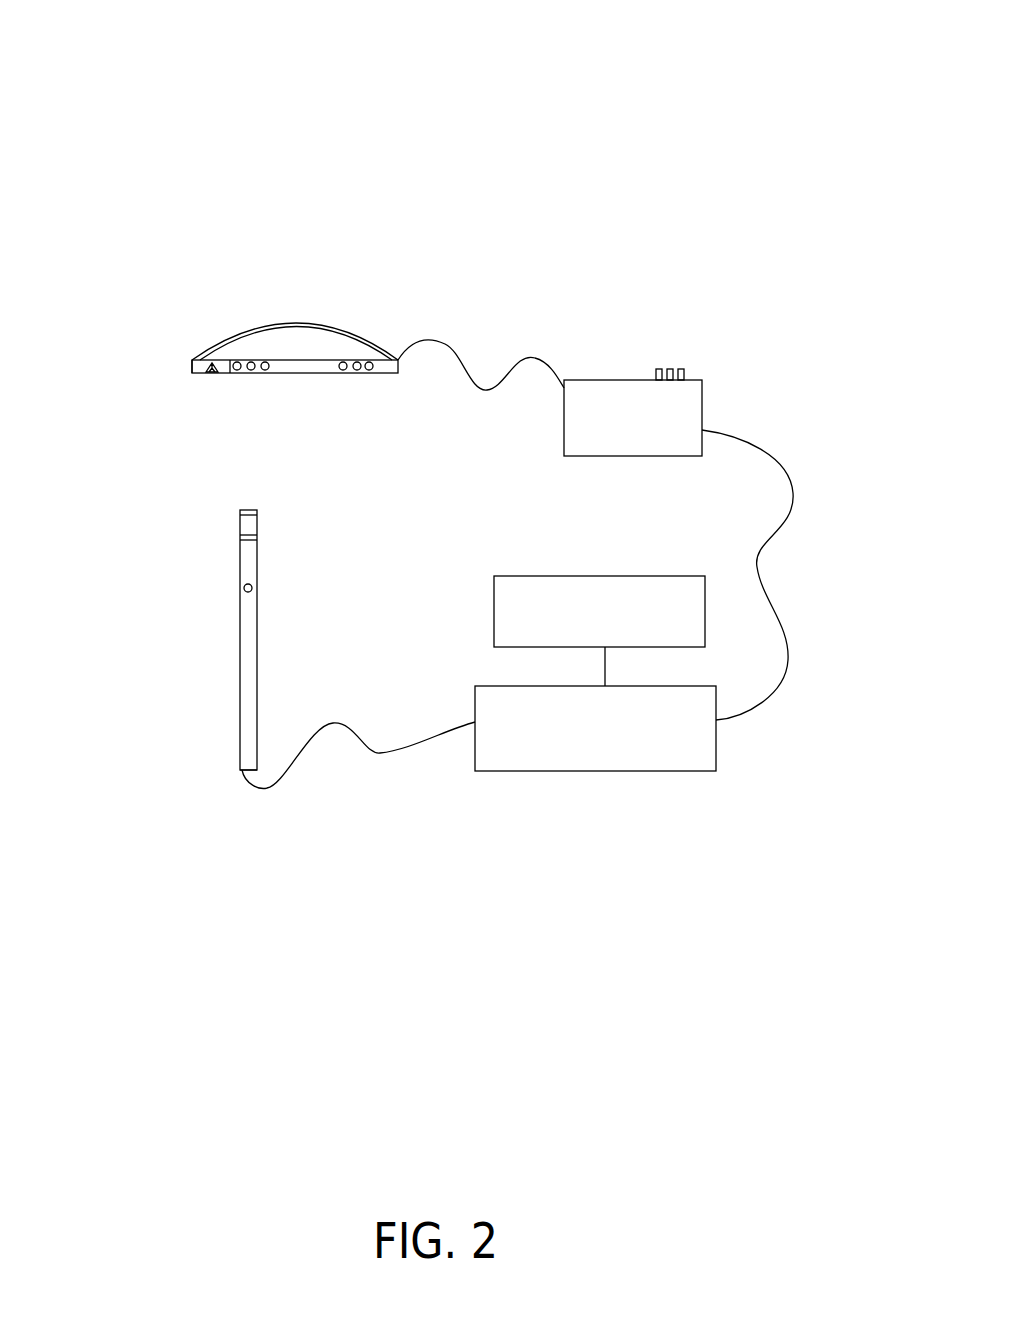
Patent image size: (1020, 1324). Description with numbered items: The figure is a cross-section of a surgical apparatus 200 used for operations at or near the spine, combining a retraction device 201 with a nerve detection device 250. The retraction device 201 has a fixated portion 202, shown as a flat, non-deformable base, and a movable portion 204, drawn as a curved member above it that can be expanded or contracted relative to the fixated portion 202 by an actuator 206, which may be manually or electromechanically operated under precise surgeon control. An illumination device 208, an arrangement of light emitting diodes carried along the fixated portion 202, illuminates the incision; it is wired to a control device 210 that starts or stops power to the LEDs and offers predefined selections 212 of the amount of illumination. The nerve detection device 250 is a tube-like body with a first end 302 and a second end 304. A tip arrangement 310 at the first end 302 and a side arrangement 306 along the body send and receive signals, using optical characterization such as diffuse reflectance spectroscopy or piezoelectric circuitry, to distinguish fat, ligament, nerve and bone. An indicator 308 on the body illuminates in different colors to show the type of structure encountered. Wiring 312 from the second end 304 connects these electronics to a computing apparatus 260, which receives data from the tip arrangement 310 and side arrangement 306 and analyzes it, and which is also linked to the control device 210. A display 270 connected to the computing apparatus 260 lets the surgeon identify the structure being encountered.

The surgical apparatus 200 is at (747, 148).
The retraction device 201 is at (190, 358).
The fixated portion 202 is at (298, 370).
The movable portion 204 is at (292, 327).
The actuator 206 is at (192, 373).
The illumination device 208 is at (233, 375).
The control device 210 is at (633, 418).
The predefined selections 212 is at (687, 372).
The nerve detection device 250 is at (214, 644).
The computing apparatus 260 is at (595, 728).
The display 270 is at (599, 611).
The first end 302 is at (237, 510).
The second end 304 is at (240, 768).
The side arrangement 306 is at (257, 538).
The indicator 308 is at (252, 588).
The tip arrangement 310 is at (257, 512).
The wiring 312 is at (280, 783).